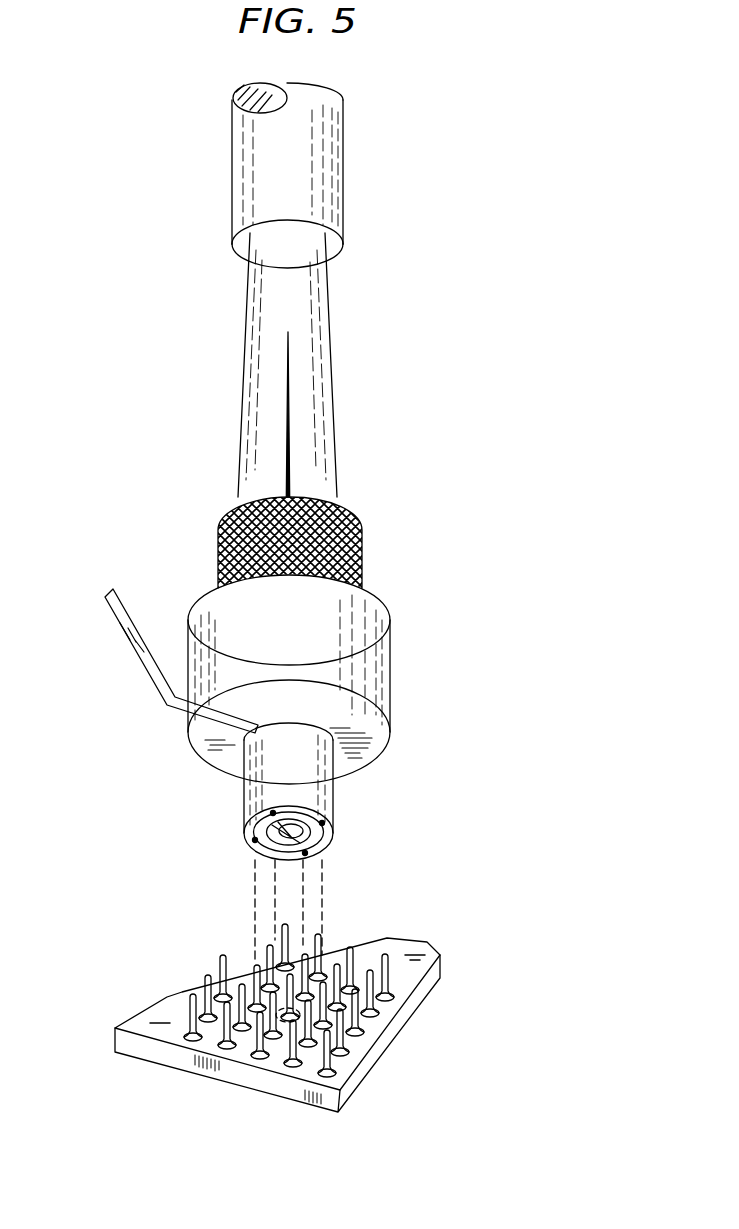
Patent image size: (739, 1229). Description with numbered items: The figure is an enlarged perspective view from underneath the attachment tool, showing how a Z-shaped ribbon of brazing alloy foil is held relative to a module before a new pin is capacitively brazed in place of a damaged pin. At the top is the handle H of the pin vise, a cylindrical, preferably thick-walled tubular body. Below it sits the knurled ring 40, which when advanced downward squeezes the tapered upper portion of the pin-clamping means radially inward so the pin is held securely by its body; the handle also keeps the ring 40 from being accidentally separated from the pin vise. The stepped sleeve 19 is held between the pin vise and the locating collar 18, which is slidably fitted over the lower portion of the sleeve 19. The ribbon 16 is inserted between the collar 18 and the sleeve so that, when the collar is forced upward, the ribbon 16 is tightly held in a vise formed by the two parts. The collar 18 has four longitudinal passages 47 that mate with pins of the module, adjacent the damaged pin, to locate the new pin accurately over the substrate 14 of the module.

The handle H is at (343, 157).
The knurled ring 40 is at (362, 548).
The stepped sleeve 19 is at (390, 682).
The locating collar 18 is at (333, 803).
The longitudinal passages 47 is at (253, 840).
The ribbon of foil 16 is at (120, 623).
The substrate 14 is at (402, 1060).